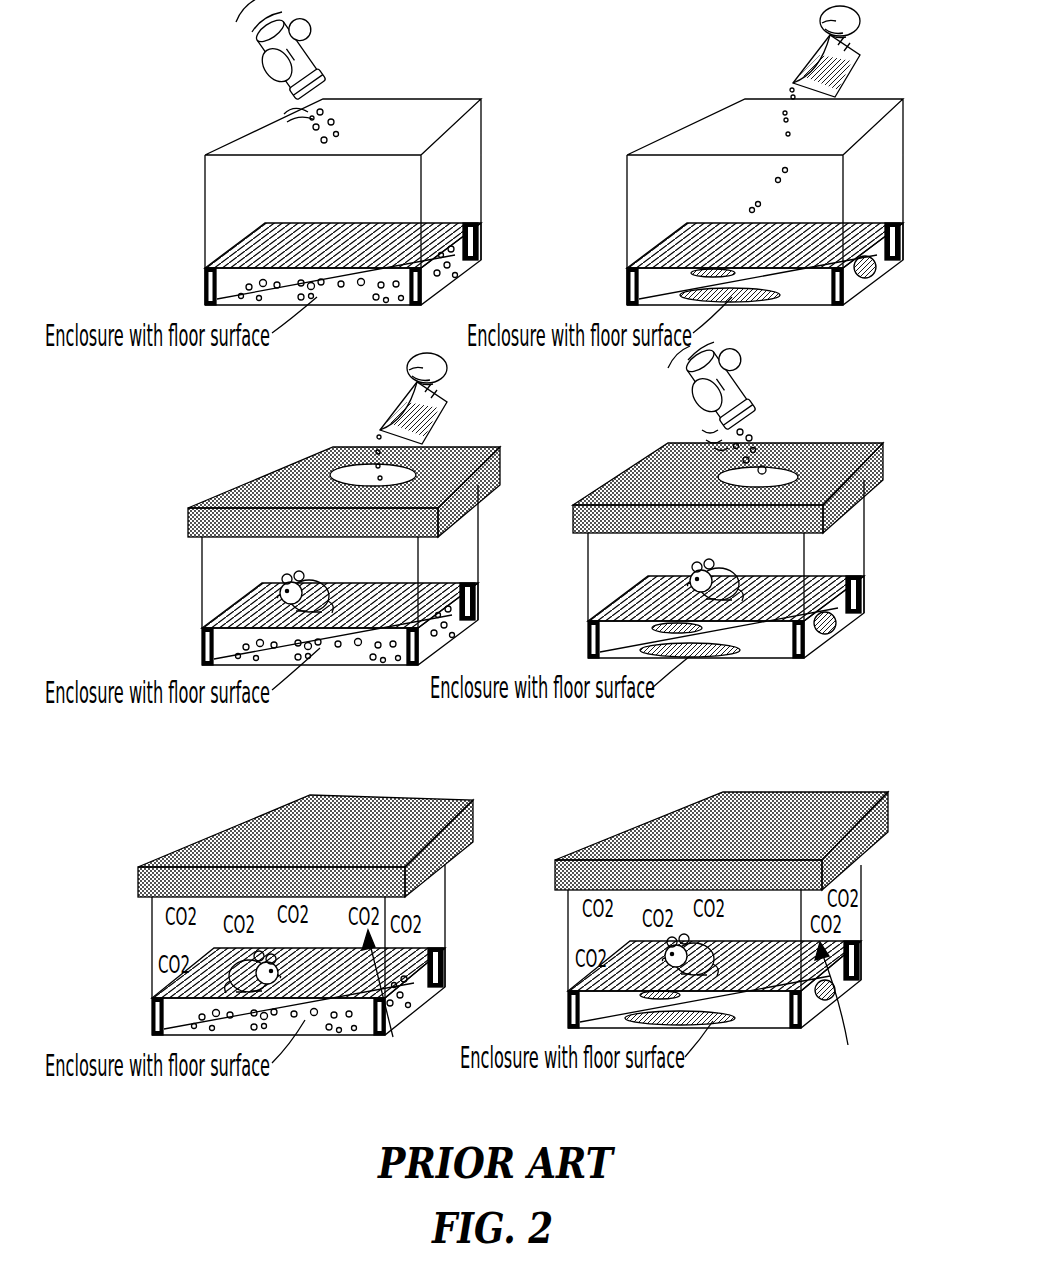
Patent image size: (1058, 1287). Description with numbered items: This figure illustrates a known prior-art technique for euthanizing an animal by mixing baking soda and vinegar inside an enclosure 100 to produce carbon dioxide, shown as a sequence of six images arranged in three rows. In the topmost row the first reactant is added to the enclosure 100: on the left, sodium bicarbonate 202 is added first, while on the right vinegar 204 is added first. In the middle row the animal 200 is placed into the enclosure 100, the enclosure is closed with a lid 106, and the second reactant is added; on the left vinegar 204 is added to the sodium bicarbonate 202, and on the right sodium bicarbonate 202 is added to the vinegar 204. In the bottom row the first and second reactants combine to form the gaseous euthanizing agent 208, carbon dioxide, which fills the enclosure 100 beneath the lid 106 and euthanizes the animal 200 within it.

The enclosure 100 is at (465, 136).
The lid 106 is at (214, 510).
The animal 200 is at (293, 597).
The sodium bicarbonate 202 is at (286, 121).
The vinegar 204 is at (788, 135).
The gaseous euthanizing agent 208 is at (614, 1007).